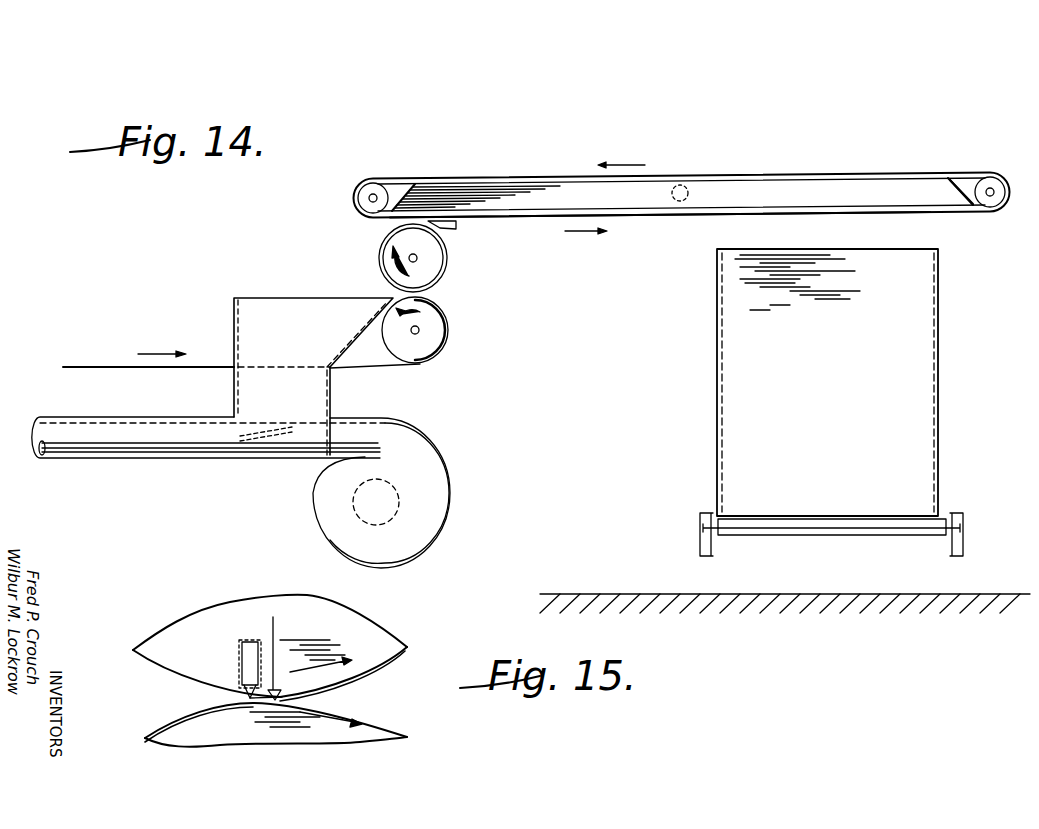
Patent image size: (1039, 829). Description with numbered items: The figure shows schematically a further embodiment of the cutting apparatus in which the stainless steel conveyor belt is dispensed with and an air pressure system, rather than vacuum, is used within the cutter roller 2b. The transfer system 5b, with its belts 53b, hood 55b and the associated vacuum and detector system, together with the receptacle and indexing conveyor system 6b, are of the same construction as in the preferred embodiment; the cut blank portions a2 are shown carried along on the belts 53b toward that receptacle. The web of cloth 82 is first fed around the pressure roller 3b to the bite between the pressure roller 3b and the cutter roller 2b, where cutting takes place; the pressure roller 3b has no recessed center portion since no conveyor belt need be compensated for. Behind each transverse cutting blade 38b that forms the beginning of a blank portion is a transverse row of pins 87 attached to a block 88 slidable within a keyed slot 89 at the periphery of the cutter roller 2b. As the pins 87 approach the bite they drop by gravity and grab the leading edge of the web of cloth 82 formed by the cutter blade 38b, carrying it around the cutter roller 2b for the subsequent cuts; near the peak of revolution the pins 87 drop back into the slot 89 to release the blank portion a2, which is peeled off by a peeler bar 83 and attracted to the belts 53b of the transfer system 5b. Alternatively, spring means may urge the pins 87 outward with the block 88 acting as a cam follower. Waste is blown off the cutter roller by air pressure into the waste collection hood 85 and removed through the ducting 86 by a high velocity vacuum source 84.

In FIG. 14, the transfer system 5b is at (778, 169).
In FIG. 14, the hood 55b is at (830, 190).
In FIG. 14, the belts 53b is at (938, 177).
In FIG. 14, the sheet a2 is at (672, 213).
In FIG. 15, the sheet a2 is at (398, 653).
In FIG. 14, the peeler bar 83 is at (456, 229).
In FIG. 14, the cutter roller 2b is at (447, 265).
In FIG. 15, the cutter roller 2b is at (383, 637).
In FIG. 14, the pressure roller 3b is at (448, 332).
In FIG. 15, the pressure roller 3b is at (385, 735).
In FIG. 14, the waste collection hood 85 is at (316, 287).
In FIG. 14, the web of cloth 82 is at (108, 367).
In FIG. 15, the web of cloth 82 is at (170, 722).
In FIG. 14, the ducting 86 is at (146, 436).
In FIG. 14, the high velocity vacuum source 84 is at (425, 470).
In FIG. 14, the receptacle and indexing conveyor system 6b is at (890, 443).
In FIG. 15, the transverse cutting blade 38b is at (273, 652).
In FIG. 15, the keyed slot 89 is at (243, 655).
In FIG. 15, the block 88 is at (240, 677).
In FIG. 15, the pins 87 is at (246, 692).